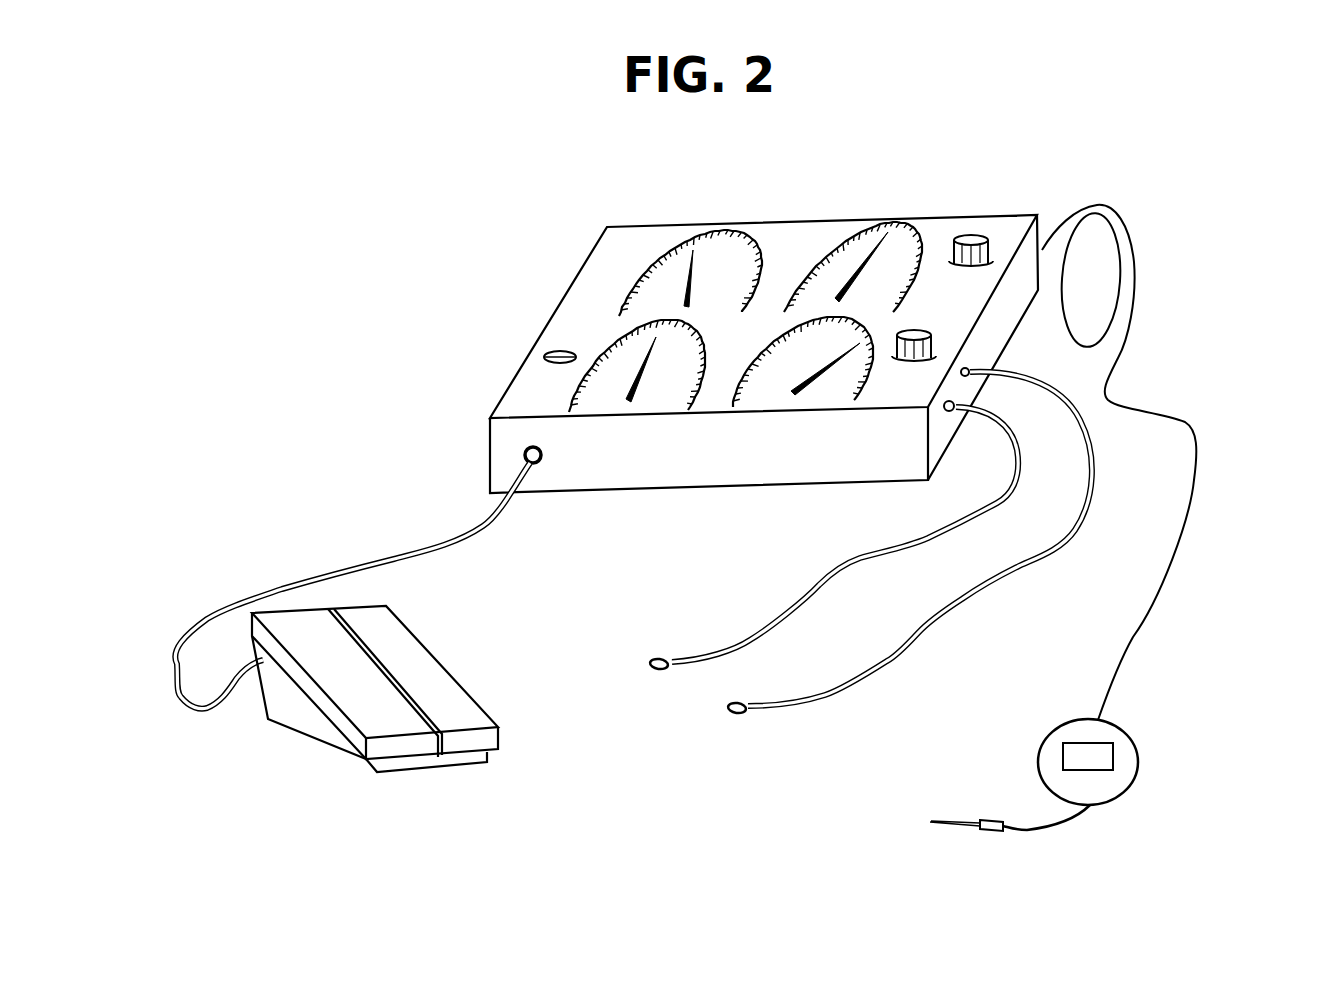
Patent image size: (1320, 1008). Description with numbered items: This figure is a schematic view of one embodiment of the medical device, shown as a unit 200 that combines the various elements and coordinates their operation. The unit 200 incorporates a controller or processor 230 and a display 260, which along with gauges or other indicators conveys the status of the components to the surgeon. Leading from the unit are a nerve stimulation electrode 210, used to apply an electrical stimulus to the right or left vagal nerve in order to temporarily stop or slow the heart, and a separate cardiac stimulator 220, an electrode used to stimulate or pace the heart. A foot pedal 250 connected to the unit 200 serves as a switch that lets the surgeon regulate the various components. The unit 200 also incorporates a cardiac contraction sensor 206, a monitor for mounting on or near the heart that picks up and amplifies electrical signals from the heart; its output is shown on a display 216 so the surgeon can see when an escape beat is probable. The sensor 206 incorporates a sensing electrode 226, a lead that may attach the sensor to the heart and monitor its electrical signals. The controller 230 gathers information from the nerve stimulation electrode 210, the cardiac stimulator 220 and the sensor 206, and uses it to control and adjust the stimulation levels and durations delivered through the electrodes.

The unit 200 is at (456, 320).
The controller 230 is at (627, 232).
The display 260 is at (898, 218).
The nerve stimulation electrode 210 is at (736, 716).
The cardiac stimulator 220 is at (656, 672).
The foot pedal 250 is at (470, 766).
The cardiac contraction sensor 206 is at (1122, 792).
The display 216 is at (1100, 757).
The sensing electrode 226 is at (955, 827).